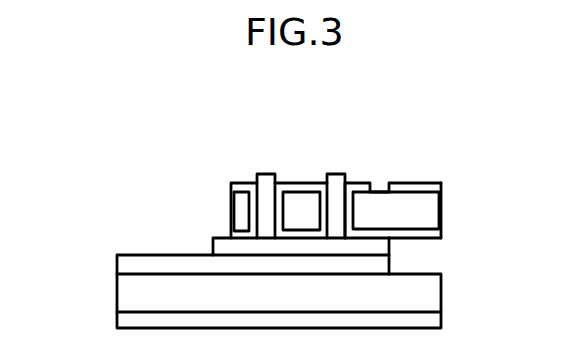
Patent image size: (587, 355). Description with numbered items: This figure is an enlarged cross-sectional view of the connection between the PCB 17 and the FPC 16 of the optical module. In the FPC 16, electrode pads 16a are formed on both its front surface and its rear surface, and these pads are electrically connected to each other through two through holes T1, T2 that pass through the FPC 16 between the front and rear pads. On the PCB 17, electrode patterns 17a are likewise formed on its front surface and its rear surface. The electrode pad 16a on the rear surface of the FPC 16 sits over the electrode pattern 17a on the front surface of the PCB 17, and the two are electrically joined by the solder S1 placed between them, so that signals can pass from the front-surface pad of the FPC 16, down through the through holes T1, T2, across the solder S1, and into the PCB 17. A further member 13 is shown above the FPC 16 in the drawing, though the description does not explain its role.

The cover member 13 is at (438, 182).
The FPC 16 is at (442, 210).
The electrode pad 16a is at (236, 231).
The PCB 17 is at (442, 300).
The electrode pattern 17a is at (126, 321).
The solder S1 is at (213, 246).
The through hole T1 is at (264, 180).
The through hole T2 is at (336, 180).